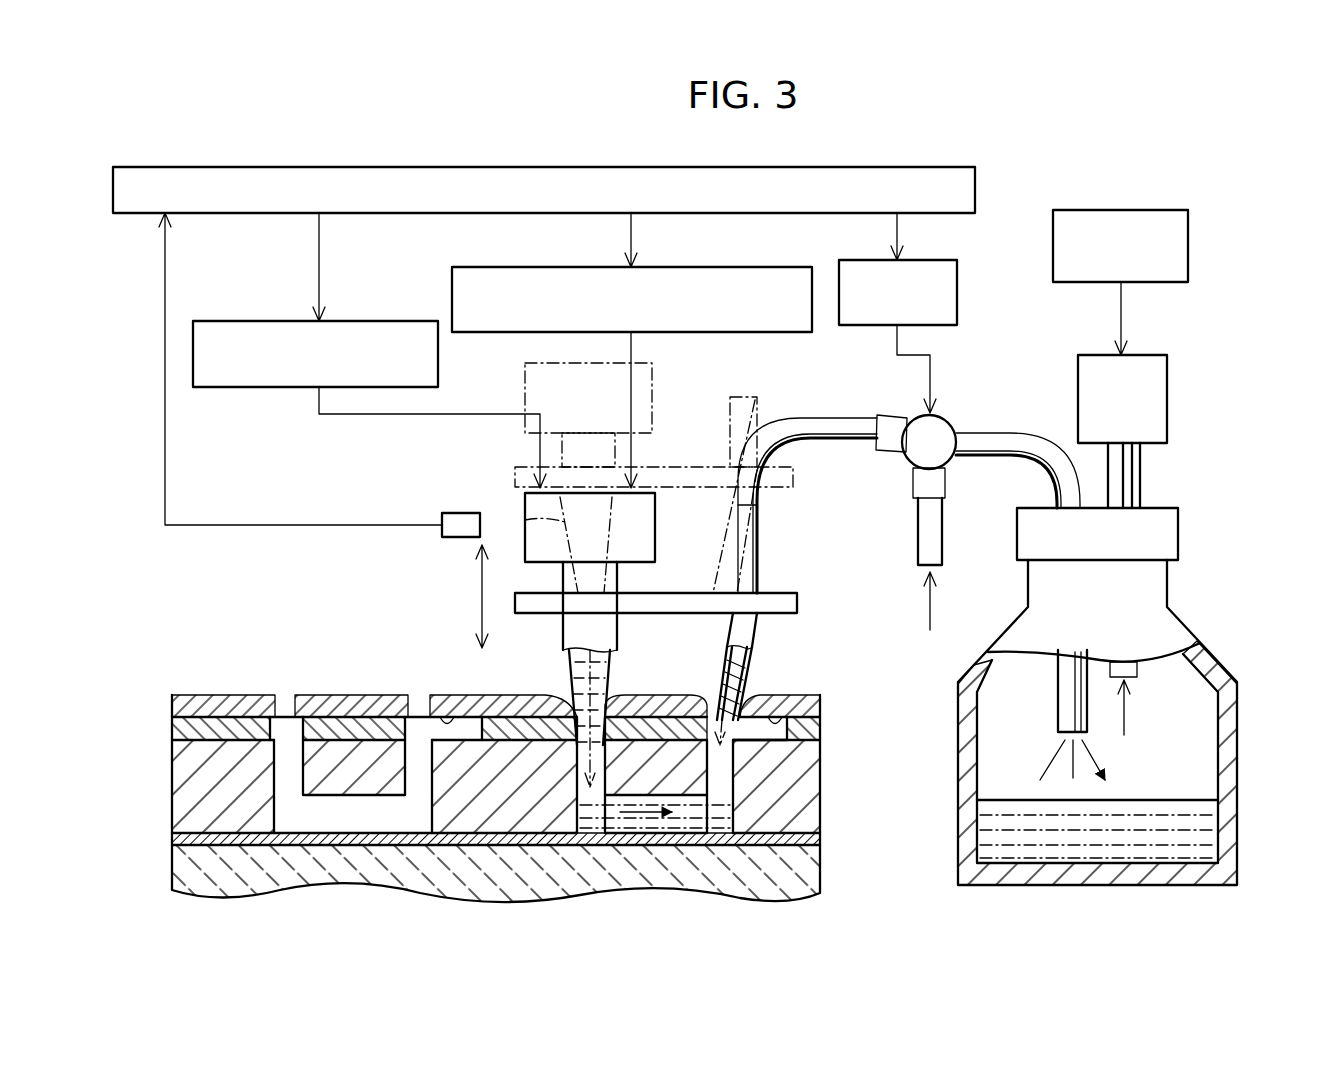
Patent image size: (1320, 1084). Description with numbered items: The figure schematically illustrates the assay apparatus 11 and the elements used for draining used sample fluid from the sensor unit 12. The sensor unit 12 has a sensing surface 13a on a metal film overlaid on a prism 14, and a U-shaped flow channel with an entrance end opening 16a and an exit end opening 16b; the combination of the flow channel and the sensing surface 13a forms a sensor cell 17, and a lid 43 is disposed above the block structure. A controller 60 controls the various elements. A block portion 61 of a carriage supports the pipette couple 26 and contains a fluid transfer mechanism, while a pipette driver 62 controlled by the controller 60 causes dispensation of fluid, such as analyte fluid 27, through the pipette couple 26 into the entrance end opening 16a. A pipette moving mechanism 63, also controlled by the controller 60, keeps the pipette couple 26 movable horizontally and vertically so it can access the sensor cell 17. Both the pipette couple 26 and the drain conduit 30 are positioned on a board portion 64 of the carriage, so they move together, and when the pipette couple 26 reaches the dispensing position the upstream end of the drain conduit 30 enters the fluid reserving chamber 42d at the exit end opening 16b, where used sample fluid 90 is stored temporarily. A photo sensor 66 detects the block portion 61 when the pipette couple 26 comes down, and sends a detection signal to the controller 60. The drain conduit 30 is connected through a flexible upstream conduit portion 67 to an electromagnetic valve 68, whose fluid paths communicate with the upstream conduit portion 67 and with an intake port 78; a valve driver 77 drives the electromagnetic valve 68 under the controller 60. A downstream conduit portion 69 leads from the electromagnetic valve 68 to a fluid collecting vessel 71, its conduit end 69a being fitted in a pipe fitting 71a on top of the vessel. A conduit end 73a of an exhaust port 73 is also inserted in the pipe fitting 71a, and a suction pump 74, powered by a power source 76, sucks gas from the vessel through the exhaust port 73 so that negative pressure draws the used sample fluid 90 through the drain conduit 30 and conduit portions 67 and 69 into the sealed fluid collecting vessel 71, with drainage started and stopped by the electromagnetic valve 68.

The assay apparatus 11 is at (280, 142).
The sensor unit 12 is at (306, 650).
The sensing surface 13a is at (523, 744).
The prism 14 is at (790, 870).
The entrance end opening 16a is at (575, 722).
The exit end opening 16b is at (760, 745).
The sensor cell 17 is at (360, 800).
The pipette couple 26 is at (575, 642).
The analyte fluid 27 is at (600, 672).
The drain conduit 30 is at (755, 643).
The fluid reserving chamber 42d is at (447, 720).
The lid 43 is at (220, 703).
The controller 60 is at (545, 165).
The block portion 61 is at (525, 510).
The pipette driver 62 is at (680, 332).
The pipette moving mechanism 63 is at (368, 321).
The board portion 64 is at (680, 593).
The photo sensor 66 is at (460, 513).
The upstream conduit portion 67 is at (818, 440).
The electromagnetic valve 68 is at (945, 420).
The downstream conduit portion 69 is at (1018, 433).
The conduit end 69a is at (1055, 700).
The fluid collecting vessel 71 is at (1122, 685).
The pipe fitting 71a is at (1165, 508).
The exhaust port 73 is at (1140, 478).
The conduit end 73a is at (1140, 670).
The suction pump 74 is at (1167, 402).
The power source 76 is at (1121, 210).
The valve driver 77 is at (957, 262).
The intake port 78 is at (915, 520).
The used sample fluid 90 is at (1160, 810).